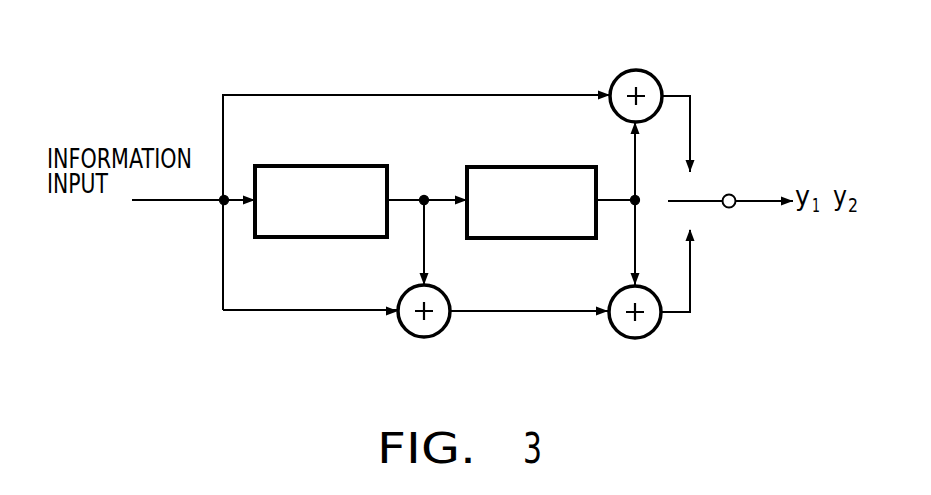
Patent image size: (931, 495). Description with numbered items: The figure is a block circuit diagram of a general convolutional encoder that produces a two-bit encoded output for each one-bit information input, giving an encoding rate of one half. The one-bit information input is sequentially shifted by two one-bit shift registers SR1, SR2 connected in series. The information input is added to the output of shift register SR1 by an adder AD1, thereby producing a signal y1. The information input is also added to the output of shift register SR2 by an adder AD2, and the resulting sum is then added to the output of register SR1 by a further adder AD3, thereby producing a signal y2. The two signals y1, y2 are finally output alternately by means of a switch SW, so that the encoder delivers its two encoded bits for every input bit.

The shift register SR1 is at (537, 166).
The shift register SR2 is at (331, 165).
The adder AD1 is at (634, 70).
The adder AD2 is at (424, 339).
The adder AD3 is at (635, 340).
The switch SW is at (700, 200).
The signal y1 is at (694, 130).
The signal y2 is at (694, 272).